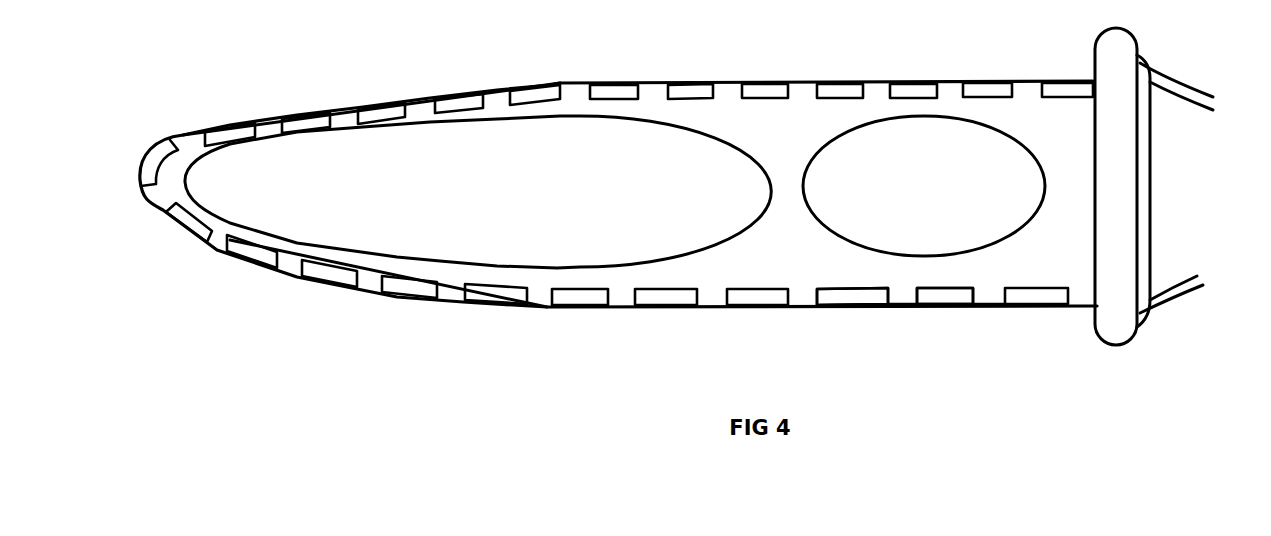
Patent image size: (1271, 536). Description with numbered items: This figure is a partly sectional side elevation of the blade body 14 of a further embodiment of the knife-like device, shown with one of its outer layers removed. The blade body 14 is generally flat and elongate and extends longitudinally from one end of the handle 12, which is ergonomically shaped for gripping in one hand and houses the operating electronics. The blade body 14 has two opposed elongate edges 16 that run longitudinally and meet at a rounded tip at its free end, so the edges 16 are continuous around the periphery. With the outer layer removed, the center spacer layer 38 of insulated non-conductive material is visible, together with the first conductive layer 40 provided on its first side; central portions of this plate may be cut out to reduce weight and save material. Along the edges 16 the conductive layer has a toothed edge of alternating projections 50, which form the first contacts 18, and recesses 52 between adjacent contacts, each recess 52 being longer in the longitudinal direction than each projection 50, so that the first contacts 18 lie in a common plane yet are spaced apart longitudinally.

The handle 12 is at (1194, 80).
The blade body 14 is at (970, 72).
The opposed elongate edges 16 is at (352, 100).
The first contacts 18 is at (417, 90).
The center spacer layer 38 is at (598, 160).
The first conductive layer 40 is at (797, 117).
The projections 50 is at (895, 297).
The recesses 52 is at (848, 297).